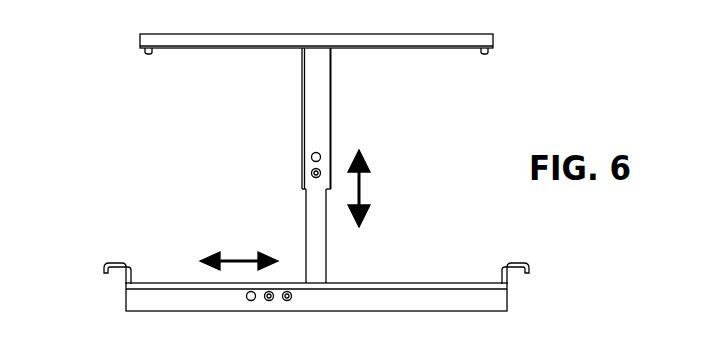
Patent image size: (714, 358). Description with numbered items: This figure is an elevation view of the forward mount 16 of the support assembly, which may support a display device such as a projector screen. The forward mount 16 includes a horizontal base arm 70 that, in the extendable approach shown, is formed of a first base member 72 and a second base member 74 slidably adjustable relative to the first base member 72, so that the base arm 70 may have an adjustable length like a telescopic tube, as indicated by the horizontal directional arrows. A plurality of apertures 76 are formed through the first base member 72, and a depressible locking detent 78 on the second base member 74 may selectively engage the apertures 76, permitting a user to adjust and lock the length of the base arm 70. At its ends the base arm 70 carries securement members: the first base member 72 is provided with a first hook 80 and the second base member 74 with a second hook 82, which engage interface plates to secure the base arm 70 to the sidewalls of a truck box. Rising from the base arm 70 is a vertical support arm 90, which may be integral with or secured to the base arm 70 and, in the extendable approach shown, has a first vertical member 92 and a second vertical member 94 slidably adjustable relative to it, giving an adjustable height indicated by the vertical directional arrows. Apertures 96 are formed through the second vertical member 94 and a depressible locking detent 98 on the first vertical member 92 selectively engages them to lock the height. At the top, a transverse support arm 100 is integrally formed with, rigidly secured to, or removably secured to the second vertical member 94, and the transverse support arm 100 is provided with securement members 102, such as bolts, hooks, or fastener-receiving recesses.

The forward mount 16 is at (100, 130).
The base arm 70 is at (122, 214).
The first base member 72 is at (405, 283).
The second base member 74 is at (200, 283).
The apertures 76 is at (270, 302).
The locking detent 78 is at (250, 302).
The first hook 80 is at (518, 263).
The second hook 82 is at (116, 263).
The vertical support arm 90 is at (424, 130).
The first vertical member 92 is at (327, 236).
The second vertical member 94 is at (332, 123).
The apertures 96 is at (311, 176).
The locking detent 98 is at (311, 156).
The transverse support arm 100 is at (285, 34).
The securement members 102 is at (144, 54).